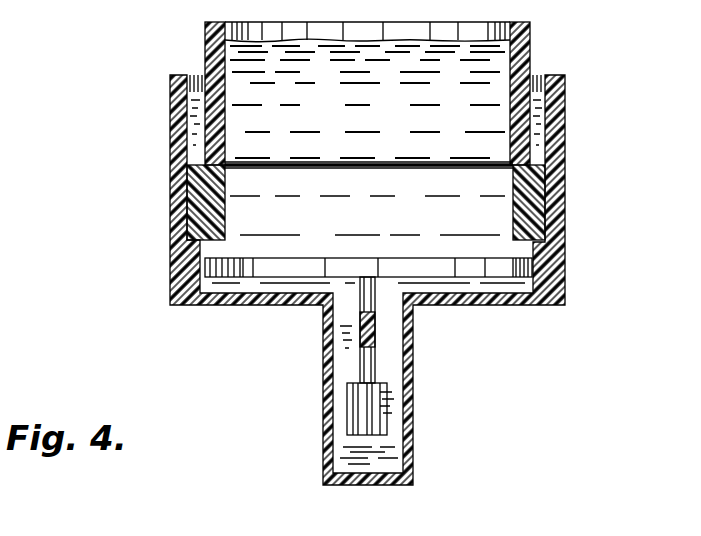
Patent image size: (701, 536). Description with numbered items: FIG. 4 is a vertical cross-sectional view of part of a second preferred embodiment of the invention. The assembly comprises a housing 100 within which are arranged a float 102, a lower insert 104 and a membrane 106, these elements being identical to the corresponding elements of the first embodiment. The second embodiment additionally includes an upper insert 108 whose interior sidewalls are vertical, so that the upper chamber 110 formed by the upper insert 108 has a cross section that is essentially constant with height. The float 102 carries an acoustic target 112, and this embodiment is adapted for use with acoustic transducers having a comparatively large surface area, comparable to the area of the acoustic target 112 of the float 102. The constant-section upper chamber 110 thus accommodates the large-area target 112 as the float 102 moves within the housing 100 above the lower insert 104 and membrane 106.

The housing 100 is at (177, 150).
The float 102 is at (355, 297).
The lower insert 104 is at (535, 208).
The membrane 106 is at (492, 163).
The upper insert 108 is at (207, 50).
The upper chamber 110 is at (382, 113).
The acoustic target 112 is at (243, 267).